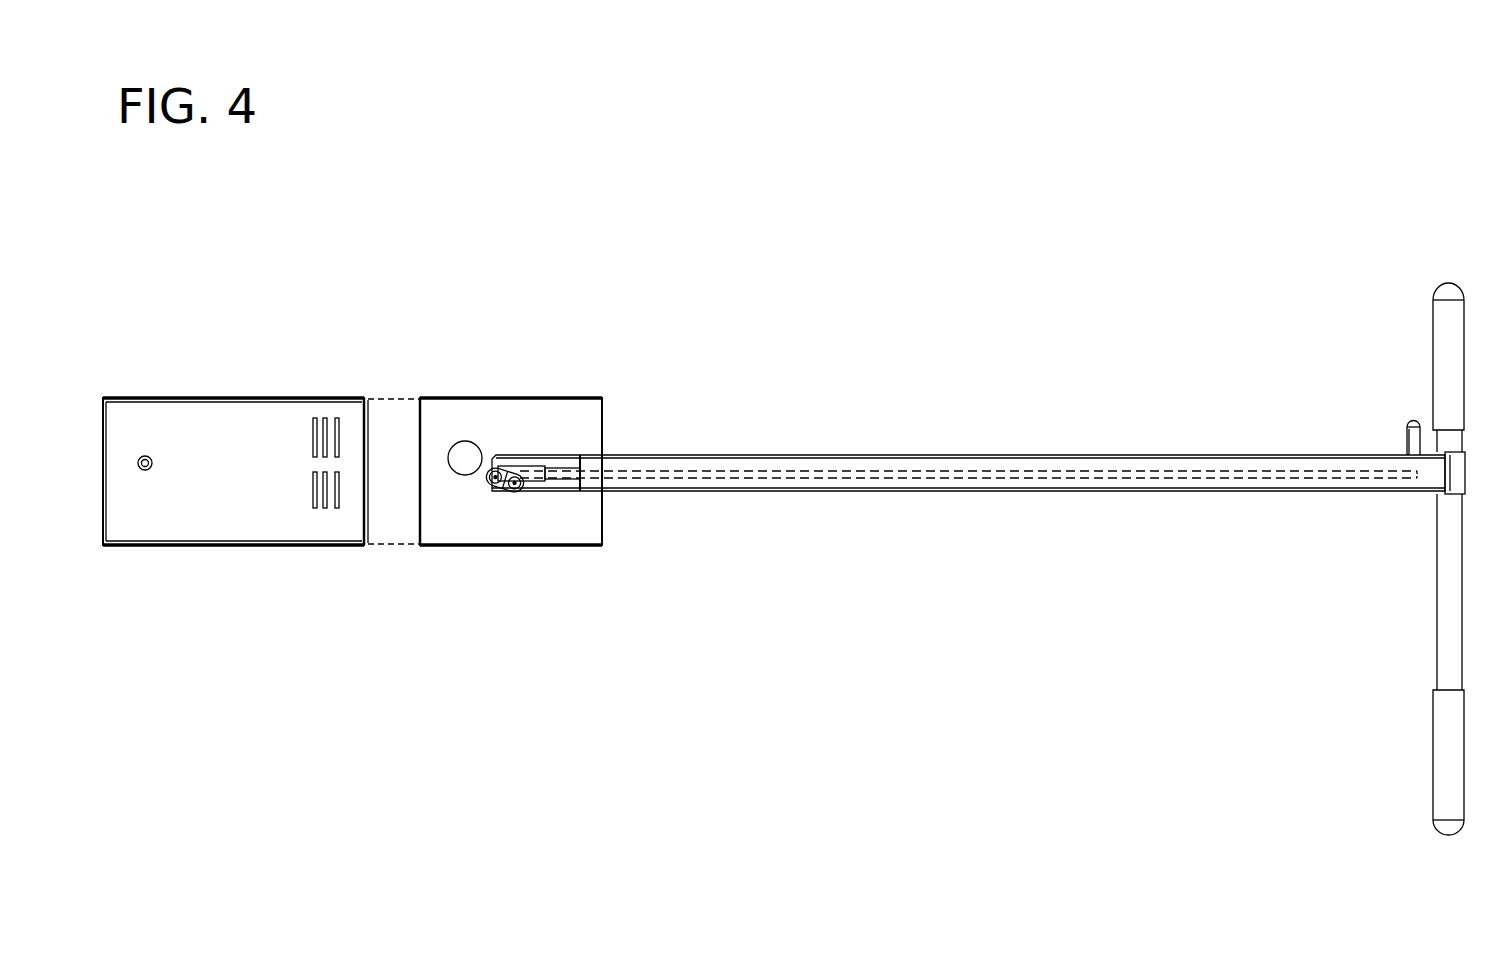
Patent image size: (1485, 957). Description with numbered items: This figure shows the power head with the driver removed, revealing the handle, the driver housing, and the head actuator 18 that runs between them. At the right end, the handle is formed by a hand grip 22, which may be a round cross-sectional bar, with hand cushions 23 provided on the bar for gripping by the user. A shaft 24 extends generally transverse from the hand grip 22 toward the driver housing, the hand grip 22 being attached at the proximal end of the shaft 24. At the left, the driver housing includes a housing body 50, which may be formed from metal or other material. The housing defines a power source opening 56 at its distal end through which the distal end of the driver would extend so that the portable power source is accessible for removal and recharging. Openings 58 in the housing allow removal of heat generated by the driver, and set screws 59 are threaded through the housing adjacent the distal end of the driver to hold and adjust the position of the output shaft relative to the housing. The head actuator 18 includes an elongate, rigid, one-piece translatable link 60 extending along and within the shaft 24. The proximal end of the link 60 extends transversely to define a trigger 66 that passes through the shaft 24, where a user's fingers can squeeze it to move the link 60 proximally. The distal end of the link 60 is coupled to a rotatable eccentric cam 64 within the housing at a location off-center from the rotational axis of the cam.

The head actuator 18 is at (554, 498).
The hand grip 22 is at (1436, 595).
The hand cushions 23 is at (1440, 340).
The shaft 24 is at (1092, 455).
The housing body 50 is at (257, 548).
The power source opening 56 is at (602, 428).
The openings 58 is at (314, 428).
The set screws 59 is at (150, 456).
The link 60 is at (830, 479).
The eccentric cam 64 is at (487, 491).
The trigger 66 is at (1411, 425).